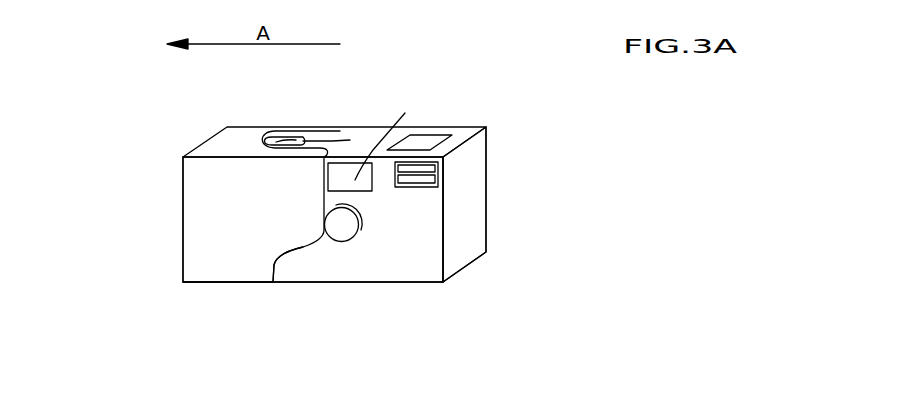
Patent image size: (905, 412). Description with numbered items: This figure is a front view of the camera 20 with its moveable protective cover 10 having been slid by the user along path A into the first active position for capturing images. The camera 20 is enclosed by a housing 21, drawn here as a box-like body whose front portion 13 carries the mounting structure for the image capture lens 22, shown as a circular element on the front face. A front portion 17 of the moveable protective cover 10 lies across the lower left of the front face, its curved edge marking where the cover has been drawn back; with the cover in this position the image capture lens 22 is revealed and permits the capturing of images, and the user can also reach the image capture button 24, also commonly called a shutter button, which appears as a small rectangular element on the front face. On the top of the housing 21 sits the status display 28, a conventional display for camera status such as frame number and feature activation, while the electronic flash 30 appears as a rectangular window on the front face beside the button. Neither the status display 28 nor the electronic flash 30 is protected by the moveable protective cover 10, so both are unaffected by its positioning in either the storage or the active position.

The moveable protective cover 10 is at (229, 143).
The front portion 13 is at (418, 257).
The front portion of the moveable protective cover 17 is at (205, 273).
The camera 20 is at (150, 269).
The housing 21 is at (462, 250).
The image capture lens 22 is at (343, 233).
The image capture button 24 is at (330, 132).
The status display 28 is at (428, 136).
The electronic flash 30 is at (430, 180).